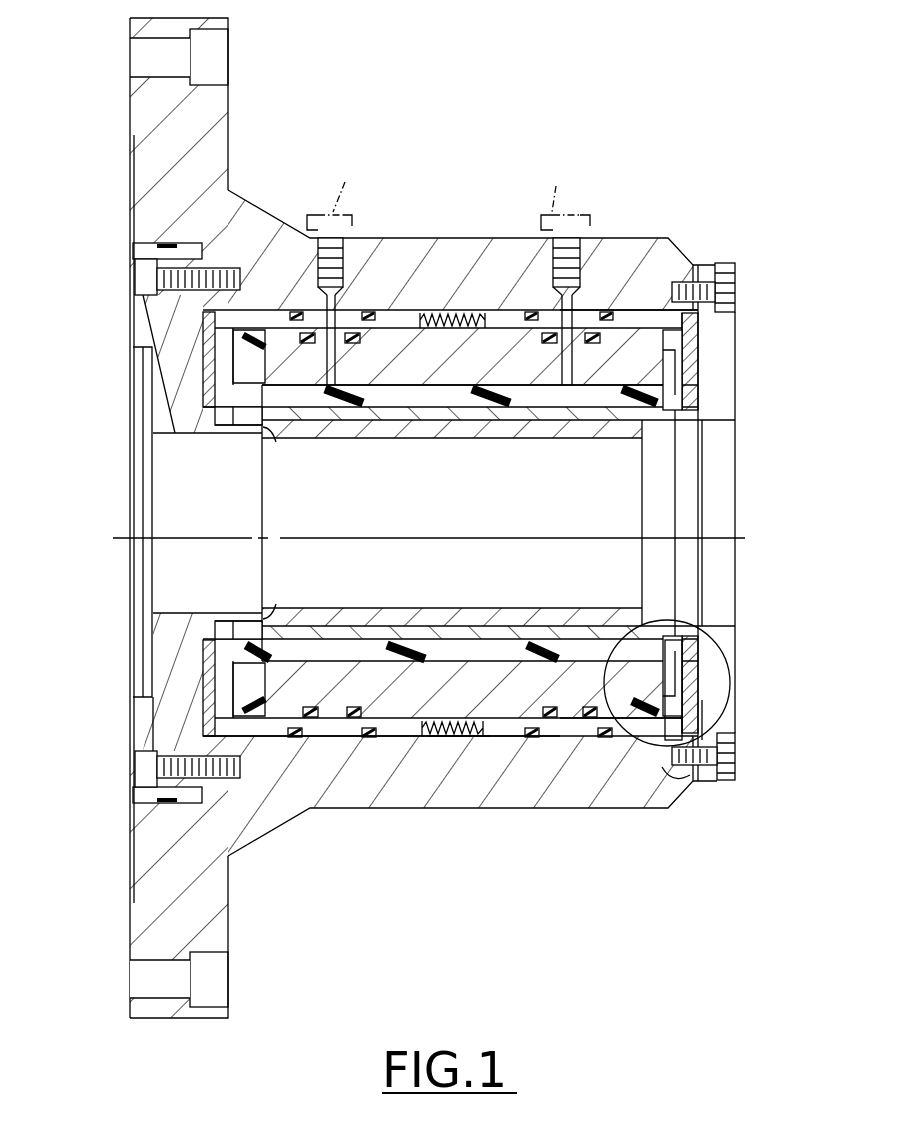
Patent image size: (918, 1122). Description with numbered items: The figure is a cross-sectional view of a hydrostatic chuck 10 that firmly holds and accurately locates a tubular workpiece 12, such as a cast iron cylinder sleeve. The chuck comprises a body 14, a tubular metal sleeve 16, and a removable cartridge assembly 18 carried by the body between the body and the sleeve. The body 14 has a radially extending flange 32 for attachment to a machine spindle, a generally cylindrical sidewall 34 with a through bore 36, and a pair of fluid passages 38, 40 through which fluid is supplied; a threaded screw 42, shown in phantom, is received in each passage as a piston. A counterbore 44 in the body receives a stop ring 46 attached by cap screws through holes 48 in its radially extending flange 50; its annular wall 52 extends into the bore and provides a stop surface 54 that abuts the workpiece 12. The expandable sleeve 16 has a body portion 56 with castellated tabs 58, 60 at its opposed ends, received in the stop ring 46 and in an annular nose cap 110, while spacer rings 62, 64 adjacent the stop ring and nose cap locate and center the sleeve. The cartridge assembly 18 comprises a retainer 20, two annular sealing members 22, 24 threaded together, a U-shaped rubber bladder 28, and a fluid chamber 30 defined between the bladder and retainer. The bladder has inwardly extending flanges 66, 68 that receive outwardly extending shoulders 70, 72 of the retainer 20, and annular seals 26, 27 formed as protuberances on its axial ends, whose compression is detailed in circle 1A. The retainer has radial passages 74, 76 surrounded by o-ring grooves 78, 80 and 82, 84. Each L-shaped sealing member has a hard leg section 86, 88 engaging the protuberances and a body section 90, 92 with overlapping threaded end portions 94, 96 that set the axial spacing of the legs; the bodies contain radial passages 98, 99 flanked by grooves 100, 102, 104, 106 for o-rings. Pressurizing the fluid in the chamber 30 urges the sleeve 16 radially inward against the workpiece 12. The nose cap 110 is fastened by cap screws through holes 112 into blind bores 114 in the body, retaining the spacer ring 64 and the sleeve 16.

The hydrostatic chuck 10 is at (708, 120).
The tubular workpiece 12 is at (600, 440).
The body 14 is at (467, 238).
The tubular metal sleeve 16 is at (262, 414).
The cartridge assembly 18 is at (587, 300).
The retainer 20 is at (447, 370).
The annular sealing member 22 is at (223, 363).
The annular sealing member 24 is at (677, 347).
The annular seal 26 is at (237, 358).
The annular seal 27 is at (663, 370).
The bladder 28 is at (555, 400).
The fluid chamber 30 is at (457, 383).
The radially extending flange 32 is at (222, 110).
The cylindrical sidewall 34 is at (418, 238).
The through bore 36 is at (700, 323).
The fluid passage 38 is at (343, 227).
The fluid passage 40 is at (573, 237).
The threaded screw 42 is at (448, 193).
The counterbore 44 is at (133, 795).
The stop ring 46 is at (152, 733).
The holes 48 is at (218, 775).
The radially extending flange 50 is at (143, 312).
The annular wall 52 is at (200, 617).
The stop surface 54 is at (271, 436).
The body portion 56 is at (380, 413).
The tabs 58 is at (215, 415).
The tabs 60 is at (680, 410).
The spacer ring 62 is at (207, 382).
The spacer ring 64 is at (693, 383).
The inwardly extending flange 66 is at (268, 335).
The inwardly extending flange 68 is at (620, 363).
The outwardly extending shoulder 70 is at (248, 398).
The outwardly extending shoulder 72 is at (602, 308).
The radial passage 74 is at (333, 370).
The radial passage 76 is at (567, 352).
The groove 78 is at (308, 706).
The groove 80 is at (353, 707).
The groove 82 is at (547, 710).
The groove 84 is at (592, 713).
The leg section 86 is at (218, 694).
The leg section 88 is at (675, 698).
The body section 90 is at (340, 732).
The body section 92 is at (577, 732).
The threaded end portion 94 is at (445, 728).
The threaded end portion 96 is at (452, 733).
The radial passage 98 is at (332, 315).
The radial passage 99 is at (567, 313).
The groove 100 is at (302, 725).
The groove 102 is at (367, 740).
The groove 104 is at (530, 737).
The groove 106 is at (605, 733).
The annular nose cap 110 is at (733, 662).
The holes 112 is at (707, 752).
The blind bores 114 is at (663, 767).
The detail view circle 1A is at (725, 657).